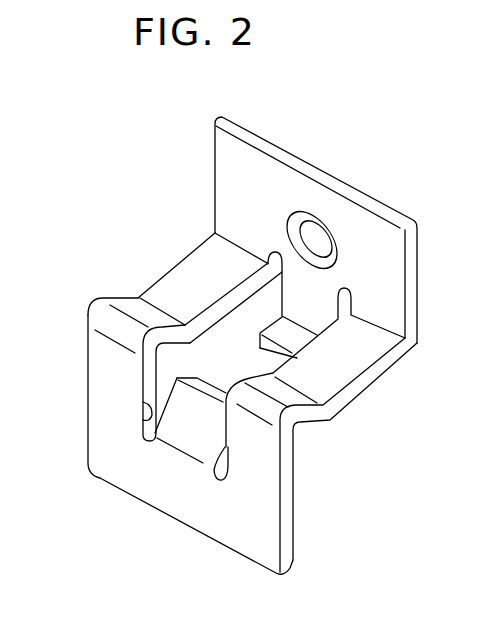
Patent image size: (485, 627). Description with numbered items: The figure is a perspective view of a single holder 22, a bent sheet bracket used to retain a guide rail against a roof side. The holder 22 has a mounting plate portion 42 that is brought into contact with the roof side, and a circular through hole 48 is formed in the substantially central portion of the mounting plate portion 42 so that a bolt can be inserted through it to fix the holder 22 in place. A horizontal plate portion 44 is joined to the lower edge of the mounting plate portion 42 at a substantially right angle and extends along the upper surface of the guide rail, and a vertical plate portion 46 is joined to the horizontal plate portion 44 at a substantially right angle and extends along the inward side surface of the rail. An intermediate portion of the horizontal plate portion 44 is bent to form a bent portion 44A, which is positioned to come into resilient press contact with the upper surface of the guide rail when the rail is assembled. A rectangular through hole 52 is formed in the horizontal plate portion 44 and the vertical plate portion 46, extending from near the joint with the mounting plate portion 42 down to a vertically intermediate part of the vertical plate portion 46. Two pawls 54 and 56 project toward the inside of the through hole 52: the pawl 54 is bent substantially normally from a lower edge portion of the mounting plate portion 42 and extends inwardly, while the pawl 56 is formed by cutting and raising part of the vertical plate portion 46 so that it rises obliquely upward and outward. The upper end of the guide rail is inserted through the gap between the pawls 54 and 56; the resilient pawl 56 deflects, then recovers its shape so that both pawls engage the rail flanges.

The holder 22 is at (182, 148).
The mounting plate portion 42 is at (227, 187).
The horizontal plate portion 44 is at (188, 262).
The bent portion 44A is at (148, 297).
The vertical plate portion 46 is at (97, 418).
The circular through hole 48 is at (332, 240).
The rectangular through hole 52 is at (146, 427).
The pawl 54 is at (266, 335).
The pawl 56 is at (190, 445).